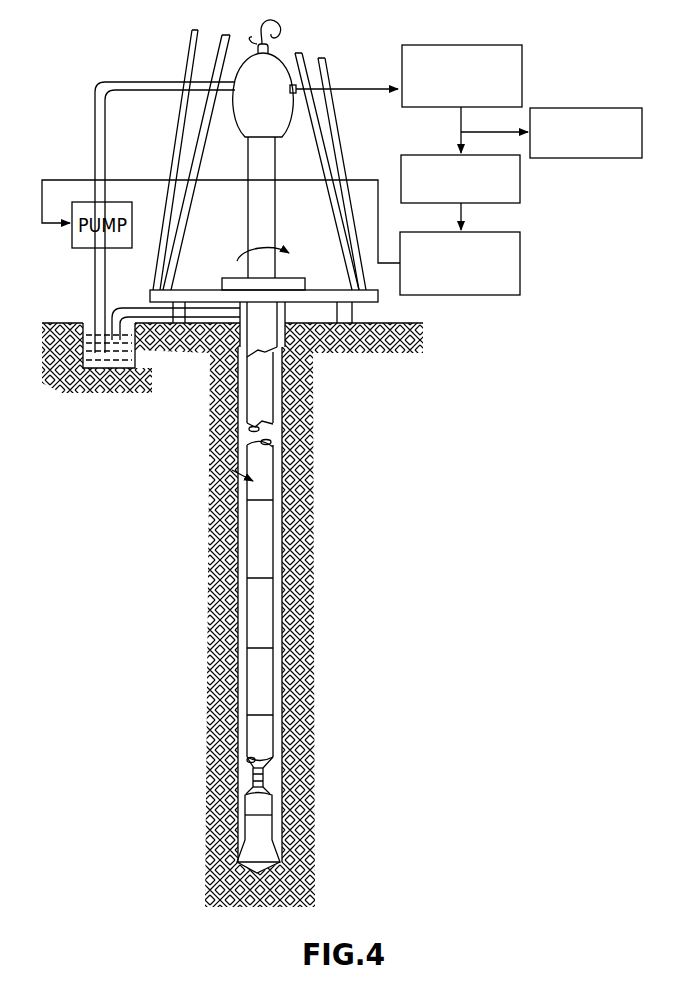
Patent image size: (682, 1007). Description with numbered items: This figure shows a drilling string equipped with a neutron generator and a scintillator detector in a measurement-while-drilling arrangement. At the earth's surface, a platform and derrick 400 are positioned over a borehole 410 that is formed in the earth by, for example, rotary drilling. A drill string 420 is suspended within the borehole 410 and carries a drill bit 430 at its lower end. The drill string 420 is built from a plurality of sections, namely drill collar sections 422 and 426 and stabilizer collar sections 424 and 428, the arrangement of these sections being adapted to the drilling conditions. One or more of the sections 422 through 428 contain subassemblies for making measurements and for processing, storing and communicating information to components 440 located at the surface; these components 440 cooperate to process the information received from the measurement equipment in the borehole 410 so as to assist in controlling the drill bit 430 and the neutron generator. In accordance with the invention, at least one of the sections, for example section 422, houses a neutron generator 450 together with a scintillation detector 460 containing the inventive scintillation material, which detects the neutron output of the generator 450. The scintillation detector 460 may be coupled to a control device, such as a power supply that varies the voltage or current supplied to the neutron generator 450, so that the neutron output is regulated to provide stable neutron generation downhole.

The platform and derrick 400 is at (421, 306).
The borehole 410 is at (283, 441).
The drill string 420 is at (228, 456).
The drill collar section 422 is at (250, 748).
The stabilizer collar section 424 is at (250, 693).
The drill collar section 426 is at (250, 605).
The stabilizer collar section 428 is at (250, 517).
The drill bit 430 is at (240, 853).
The surface components 440 is at (559, 196).
The neutron generator 450 is at (276, 756).
The scintillation detector 460 is at (266, 787).